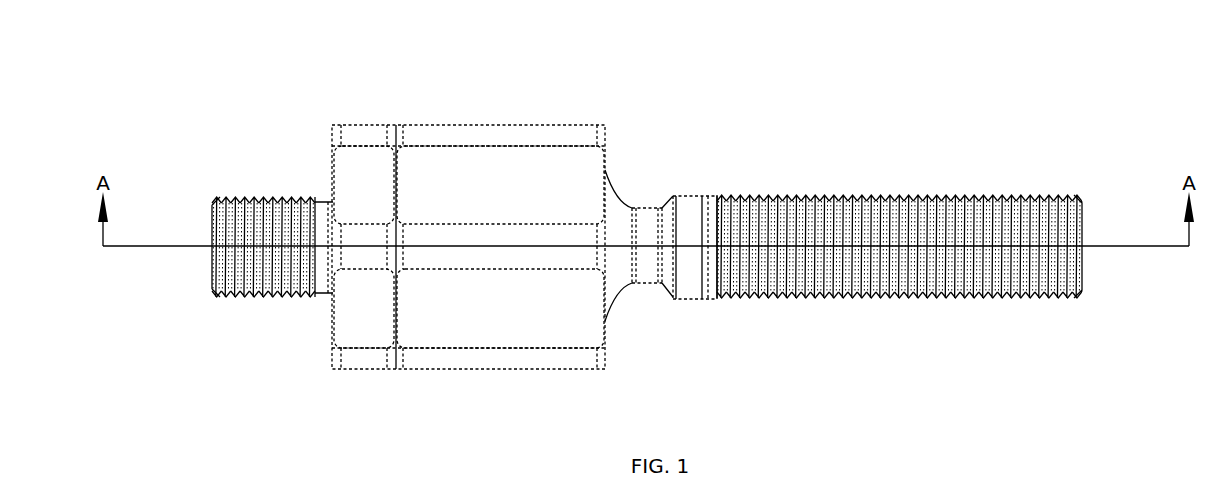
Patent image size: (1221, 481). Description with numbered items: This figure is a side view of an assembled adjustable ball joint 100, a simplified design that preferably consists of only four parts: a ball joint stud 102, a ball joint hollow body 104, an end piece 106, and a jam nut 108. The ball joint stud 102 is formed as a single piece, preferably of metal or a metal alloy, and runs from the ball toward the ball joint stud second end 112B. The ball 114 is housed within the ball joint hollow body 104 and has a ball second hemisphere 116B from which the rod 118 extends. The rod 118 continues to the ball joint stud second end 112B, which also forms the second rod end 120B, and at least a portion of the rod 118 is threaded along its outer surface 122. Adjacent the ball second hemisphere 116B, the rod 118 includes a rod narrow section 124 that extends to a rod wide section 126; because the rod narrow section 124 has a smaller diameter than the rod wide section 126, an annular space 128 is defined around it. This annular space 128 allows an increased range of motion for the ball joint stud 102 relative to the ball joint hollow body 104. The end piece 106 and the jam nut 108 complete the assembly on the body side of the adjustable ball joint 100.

The adjustable ball joint 100 is at (743, 87).
The ball joint stud 102 is at (757, 210).
The ball joint hollow body 104 is at (458, 215).
The end piece 106 is at (669, 226).
The jam nut 108 is at (362, 177).
The ball joint stud second end 112B is at (677, 226).
The ball 114 is at (617, 292).
The ball second hemisphere 116B is at (647, 221).
The rod 118 is at (647, 251).
The second rod end 120B is at (677, 226).
The outer surface 122 is at (647, 226).
The rod narrow section 124 is at (648, 231).
The rod wide section 126 is at (707, 287).
The annular space 128 is at (704, 274).